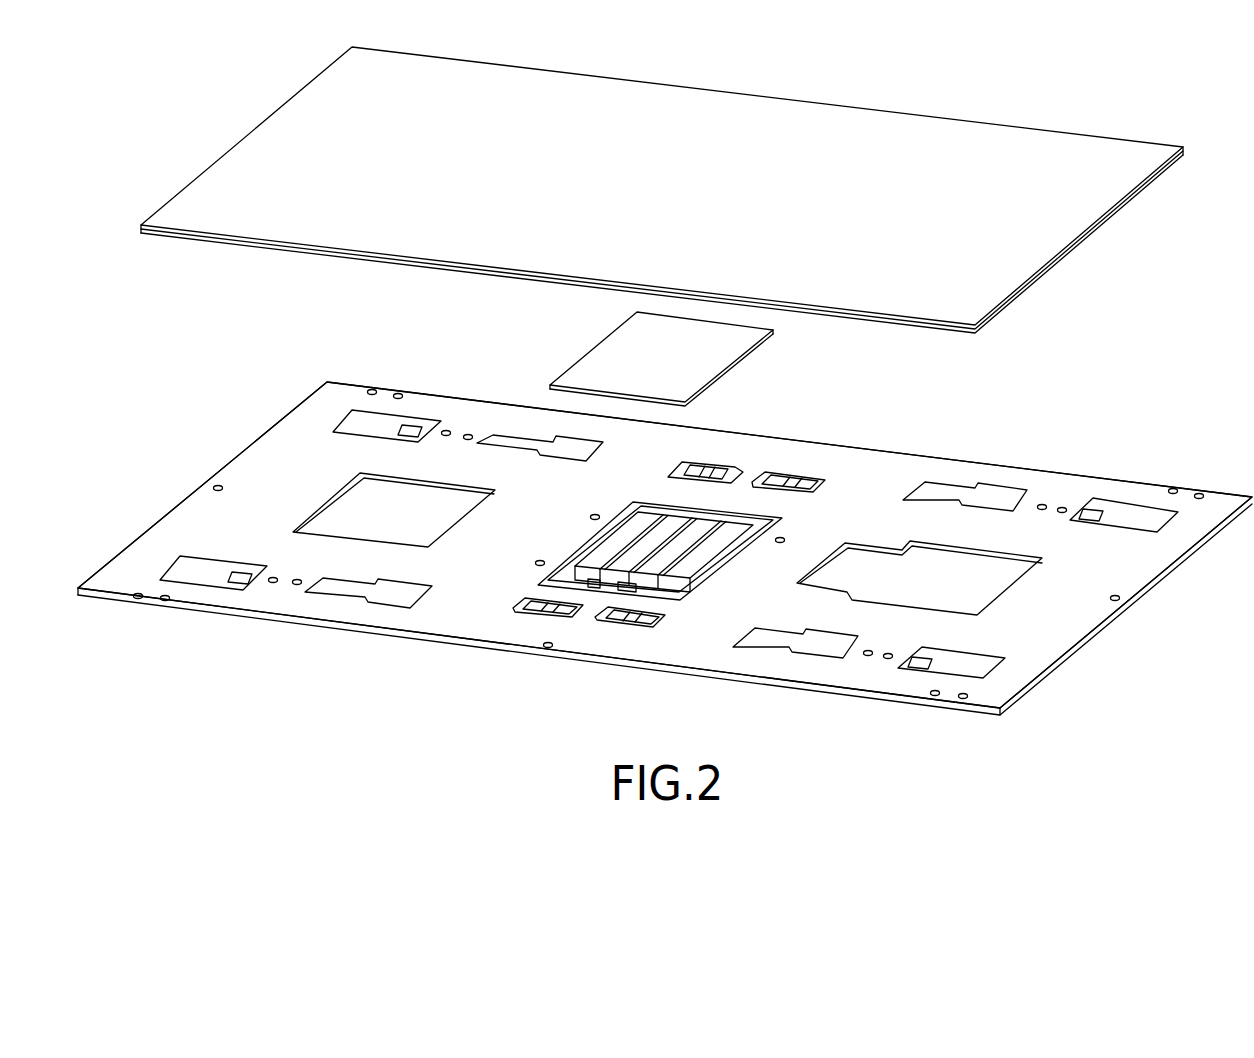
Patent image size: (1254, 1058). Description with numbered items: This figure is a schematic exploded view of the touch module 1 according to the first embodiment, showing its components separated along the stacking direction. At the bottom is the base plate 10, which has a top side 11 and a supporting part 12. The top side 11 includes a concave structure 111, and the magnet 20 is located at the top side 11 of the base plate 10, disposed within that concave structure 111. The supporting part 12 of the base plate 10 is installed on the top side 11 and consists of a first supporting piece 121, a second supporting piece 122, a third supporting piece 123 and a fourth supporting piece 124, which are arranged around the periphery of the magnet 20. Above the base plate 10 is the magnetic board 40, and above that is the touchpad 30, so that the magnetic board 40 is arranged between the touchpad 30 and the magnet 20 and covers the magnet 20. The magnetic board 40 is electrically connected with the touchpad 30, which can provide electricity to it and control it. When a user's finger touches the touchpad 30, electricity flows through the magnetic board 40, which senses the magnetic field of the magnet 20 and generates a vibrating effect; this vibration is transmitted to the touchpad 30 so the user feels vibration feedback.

The touch module 1 is at (1106, 77).
The base plate 10 is at (1065, 488).
The top side 11 is at (861, 484).
The concave structure 111 is at (590, 580).
The supporting part 12 is at (1180, 262).
The first supporting piece 121 is at (722, 467).
The second supporting piece 122 is at (778, 473).
The third supporting piece 123 is at (562, 602).
The fourth supporting piece 124 is at (595, 612).
The magnet 20 is at (638, 535).
The touchpad 30 is at (867, 123).
The magnetic board 40 is at (608, 360).